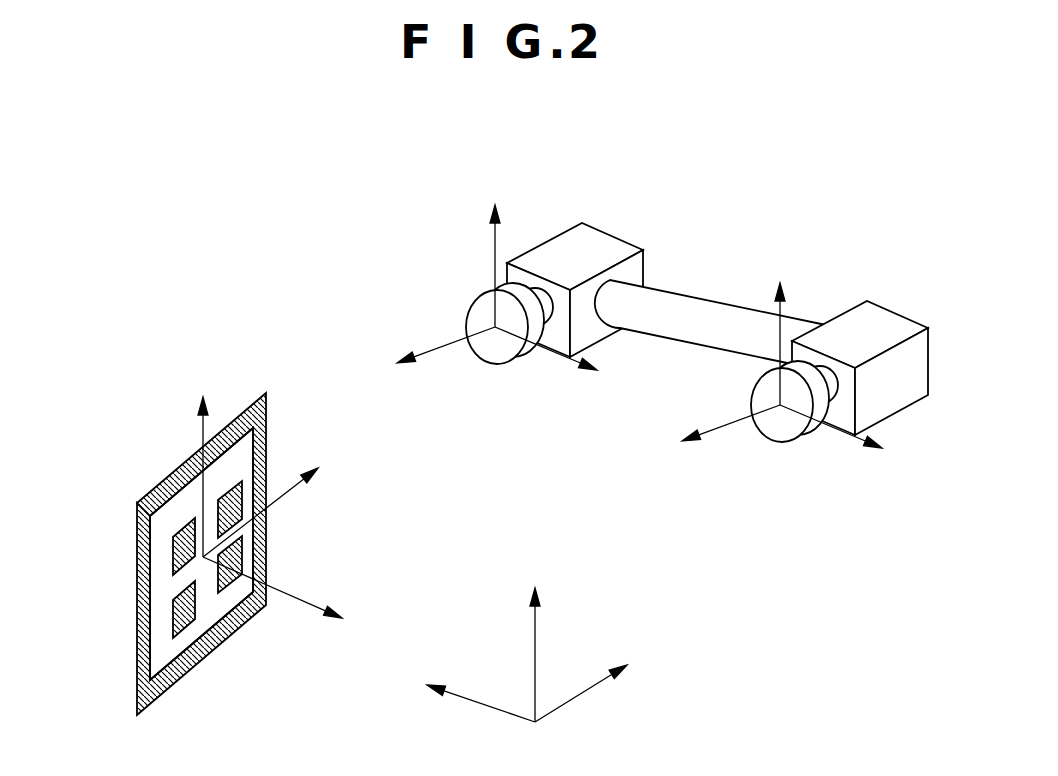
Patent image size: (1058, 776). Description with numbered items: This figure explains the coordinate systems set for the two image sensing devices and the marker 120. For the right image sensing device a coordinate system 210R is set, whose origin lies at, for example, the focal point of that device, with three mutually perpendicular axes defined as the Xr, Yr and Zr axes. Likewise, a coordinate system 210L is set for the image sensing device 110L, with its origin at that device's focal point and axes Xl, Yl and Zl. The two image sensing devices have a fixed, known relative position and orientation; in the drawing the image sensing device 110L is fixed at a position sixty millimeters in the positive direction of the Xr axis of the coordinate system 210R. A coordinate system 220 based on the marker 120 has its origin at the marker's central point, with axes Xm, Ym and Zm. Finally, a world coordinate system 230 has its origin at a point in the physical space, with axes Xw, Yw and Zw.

The image sensing device 110L is at (847, 308).
The marker 120 is at (140, 500).
The coordinate system 210R is at (495, 247).
The coordinate system 210L is at (778, 305).
The coordinate system 220 is at (201, 395).
The world coordinate system 230 is at (598, 683).